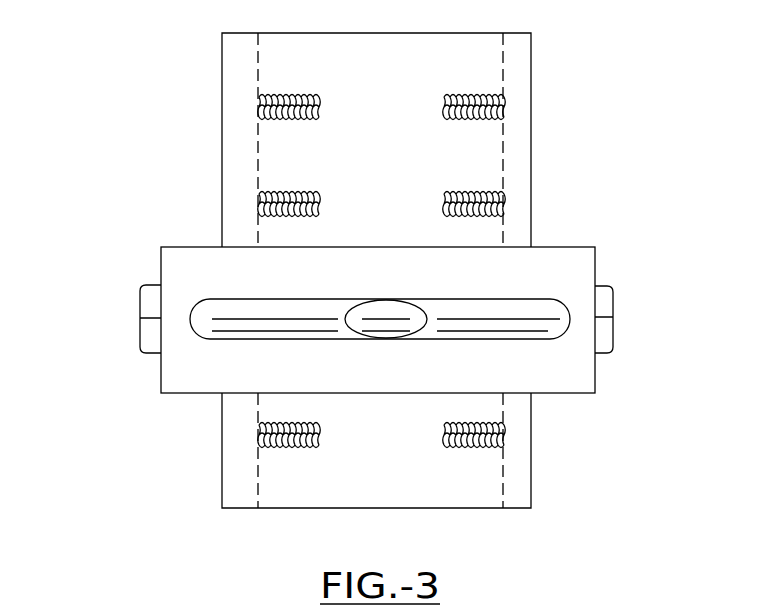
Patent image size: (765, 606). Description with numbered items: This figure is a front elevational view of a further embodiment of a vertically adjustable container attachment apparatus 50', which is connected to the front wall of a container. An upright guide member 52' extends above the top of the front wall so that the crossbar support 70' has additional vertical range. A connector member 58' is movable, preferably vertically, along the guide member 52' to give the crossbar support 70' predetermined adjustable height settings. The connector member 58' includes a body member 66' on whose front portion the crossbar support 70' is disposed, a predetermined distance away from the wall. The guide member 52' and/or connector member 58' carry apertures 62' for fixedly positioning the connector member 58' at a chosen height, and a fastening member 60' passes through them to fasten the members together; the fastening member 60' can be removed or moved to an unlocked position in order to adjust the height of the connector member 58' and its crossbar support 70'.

The vertically adjustable container attachment apparatus 50' is at (366, 291).
The guide member 52' is at (309, 270).
The connector member 58' is at (324, 313).
The fastening member 60' is at (370, 319).
The apertures 62' is at (378, 271).
The body member 66' is at (361, 296).
The crossbar support 70' is at (380, 338).